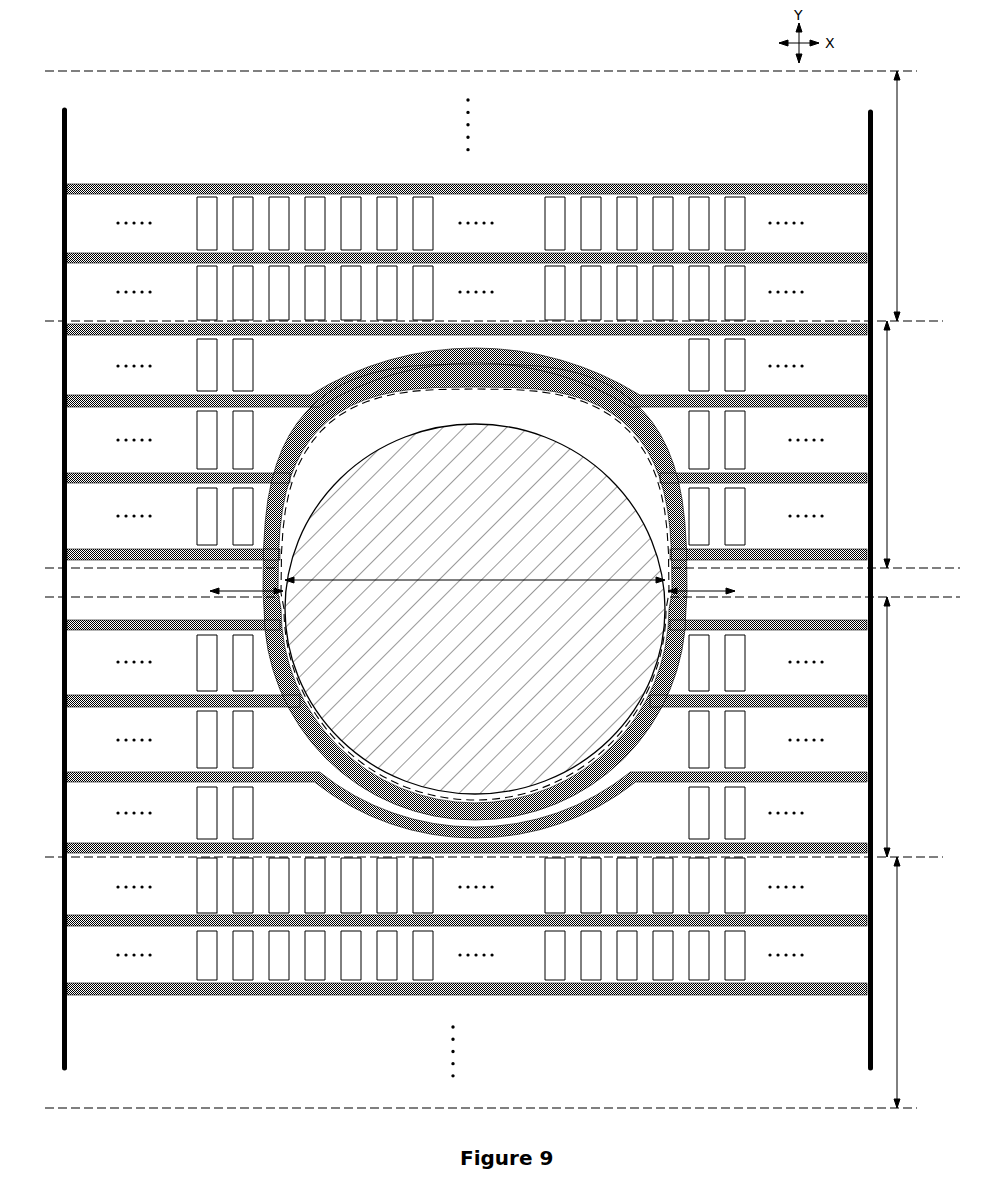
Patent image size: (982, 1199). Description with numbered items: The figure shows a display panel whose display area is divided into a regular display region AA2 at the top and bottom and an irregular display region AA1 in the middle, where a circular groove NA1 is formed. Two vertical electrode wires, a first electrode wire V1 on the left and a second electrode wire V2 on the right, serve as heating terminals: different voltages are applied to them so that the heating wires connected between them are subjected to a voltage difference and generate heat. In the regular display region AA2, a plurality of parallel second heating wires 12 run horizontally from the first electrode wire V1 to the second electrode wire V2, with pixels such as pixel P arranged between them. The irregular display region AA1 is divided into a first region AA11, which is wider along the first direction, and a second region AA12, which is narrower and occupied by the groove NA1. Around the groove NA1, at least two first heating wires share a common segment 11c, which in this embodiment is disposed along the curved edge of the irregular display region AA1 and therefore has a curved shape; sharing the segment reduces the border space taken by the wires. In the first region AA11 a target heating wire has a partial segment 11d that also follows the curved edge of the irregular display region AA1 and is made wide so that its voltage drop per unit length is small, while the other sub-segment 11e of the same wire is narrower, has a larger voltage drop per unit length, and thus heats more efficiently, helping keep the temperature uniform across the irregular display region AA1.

The common segment 11c is at (357, 752).
The partial segment 11d is at (276, 654).
The other sub-segment 11e is at (80, 695).
The second heating wire 12 is at (795, 995).
The pixel P is at (205, 895).
The groove NA1 is at (484, 631).
The irregular display region AA1 is at (901, 589).
The regular display region AA2 is at (912, 589).
The first region AA11 is at (472, 584).
The second region AA12 is at (475, 574).
The first electrode wire V1 is at (62, 602).
The second electrode wire V2 is at (876, 603).